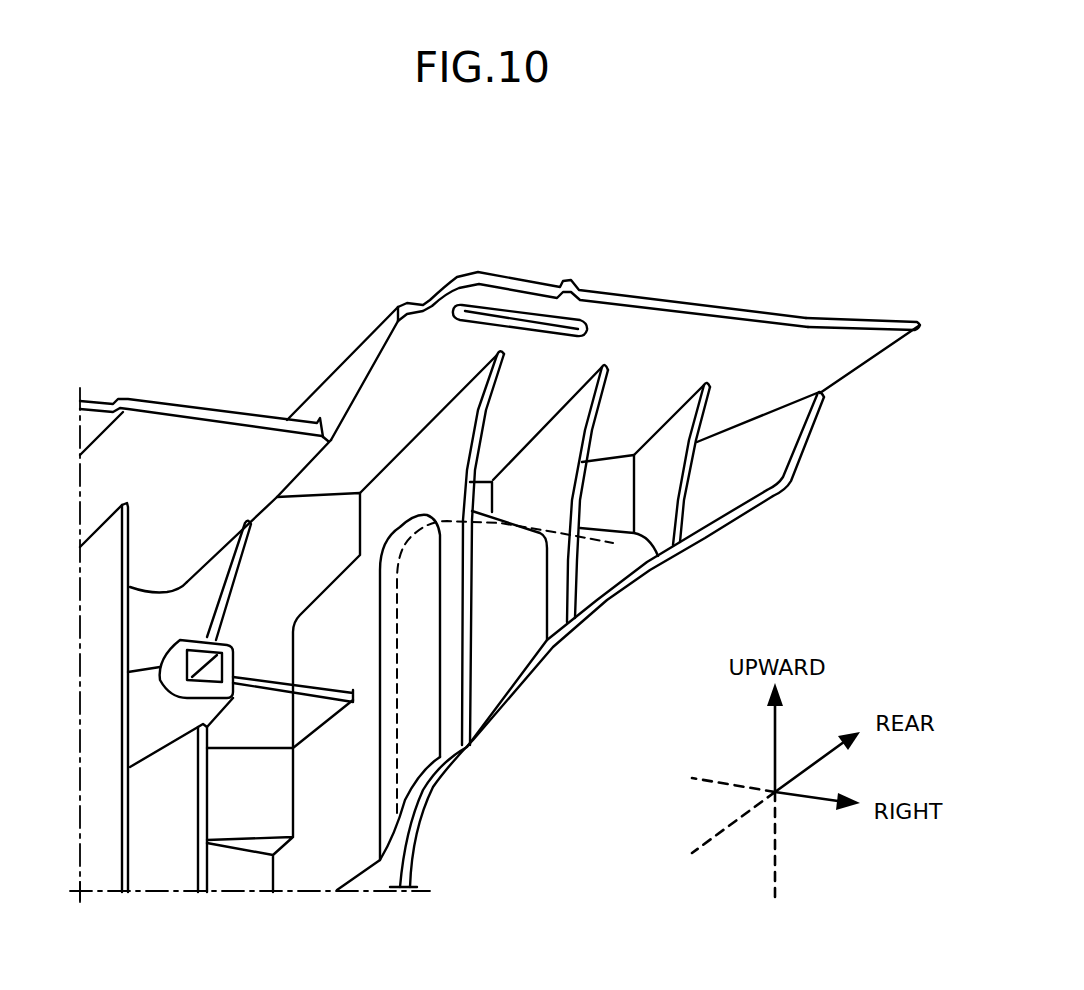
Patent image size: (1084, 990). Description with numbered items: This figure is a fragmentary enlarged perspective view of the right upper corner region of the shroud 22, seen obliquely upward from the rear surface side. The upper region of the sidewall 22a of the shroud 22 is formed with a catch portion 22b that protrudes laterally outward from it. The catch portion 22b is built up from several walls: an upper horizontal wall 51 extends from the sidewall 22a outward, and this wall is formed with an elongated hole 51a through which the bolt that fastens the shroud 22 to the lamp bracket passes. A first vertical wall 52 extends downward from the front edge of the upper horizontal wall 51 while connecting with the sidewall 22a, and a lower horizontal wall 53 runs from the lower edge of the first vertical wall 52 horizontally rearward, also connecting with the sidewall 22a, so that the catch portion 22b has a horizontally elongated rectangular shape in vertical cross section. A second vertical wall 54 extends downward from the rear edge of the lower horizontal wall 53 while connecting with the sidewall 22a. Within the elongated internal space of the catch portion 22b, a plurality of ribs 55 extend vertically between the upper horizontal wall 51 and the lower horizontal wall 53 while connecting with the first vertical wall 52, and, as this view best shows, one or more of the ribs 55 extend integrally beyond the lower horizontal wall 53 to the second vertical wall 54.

The shroud 22 is at (180, 381).
The sidewall 22a is at (397, 755).
The catch portion 22b is at (812, 302).
The upper horizontal wall 51 is at (649, 330).
The elongated hole 51a is at (523, 325).
The first vertical wall 52 is at (745, 467).
The lower horizontal wall 53 is at (613, 543).
The second vertical wall 54 is at (500, 630).
The ribs 55 is at (413, 493).